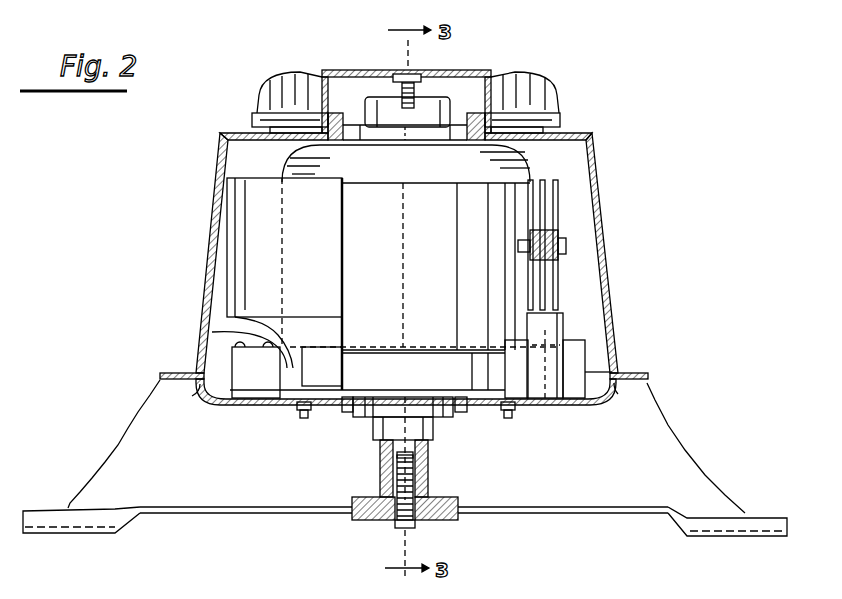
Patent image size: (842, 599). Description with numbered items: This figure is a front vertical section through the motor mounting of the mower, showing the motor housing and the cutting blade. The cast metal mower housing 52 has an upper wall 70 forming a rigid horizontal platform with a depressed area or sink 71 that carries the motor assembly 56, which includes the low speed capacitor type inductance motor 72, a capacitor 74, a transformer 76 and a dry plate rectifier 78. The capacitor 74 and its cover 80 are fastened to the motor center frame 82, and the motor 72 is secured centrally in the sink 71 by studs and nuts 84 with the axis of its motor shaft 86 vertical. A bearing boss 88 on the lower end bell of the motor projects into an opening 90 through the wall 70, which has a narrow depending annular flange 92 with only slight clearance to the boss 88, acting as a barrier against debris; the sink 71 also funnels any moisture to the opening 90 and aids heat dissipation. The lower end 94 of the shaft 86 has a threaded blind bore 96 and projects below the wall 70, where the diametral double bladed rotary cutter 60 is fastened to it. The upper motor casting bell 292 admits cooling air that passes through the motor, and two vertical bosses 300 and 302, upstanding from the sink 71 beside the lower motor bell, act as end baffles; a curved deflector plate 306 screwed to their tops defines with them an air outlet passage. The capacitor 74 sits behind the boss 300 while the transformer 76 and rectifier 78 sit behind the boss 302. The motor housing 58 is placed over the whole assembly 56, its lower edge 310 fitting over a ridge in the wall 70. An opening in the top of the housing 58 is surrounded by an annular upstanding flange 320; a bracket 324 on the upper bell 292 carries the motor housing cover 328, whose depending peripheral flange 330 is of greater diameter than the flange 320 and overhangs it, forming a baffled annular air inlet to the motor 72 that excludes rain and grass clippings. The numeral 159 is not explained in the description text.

The mower housing 52 is at (125, 425).
The motor assembly 56 is at (557, 162).
The motor housing 58 is at (215, 222).
The rotary cutter 60 is at (262, 515).
The mower housing upper wall 70 is at (166, 372).
The depressed area (sink) 71 is at (262, 403).
The electric motor 72 is at (488, 387).
The capacitor 74 is at (240, 258).
The transformer 76 is at (560, 332).
The dry plate rectifier 78 is at (557, 228).
The capacitor cover 80 is at (228, 290).
The motor center frame 82 is at (425, 165).
The studs and nuts 84 is at (300, 412).
The motor shaft 86 is at (416, 450).
The bearing boss 88 is at (365, 412).
The opening 90 is at (350, 395).
The depending annular flange 92 is at (340, 410).
The lower end of motor shaft 94 is at (413, 487).
The threaded blind bore 96 is at (403, 477).
The base plate surface 159 is at (470, 545).
The upper motor casting bell 292 is at (378, 170).
The vertical boss 300 is at (230, 350).
The vertical boss 302 is at (573, 367).
The curved deflector plate 306 is at (250, 330).
The motor housing lower edge 310 is at (403, 398).
The annular upstanding flange 320 is at (467, 140).
The bracket 324 is at (430, 97).
The motor housing cover 328 is at (530, 80).
The depending peripheral flange 330 is at (262, 96).